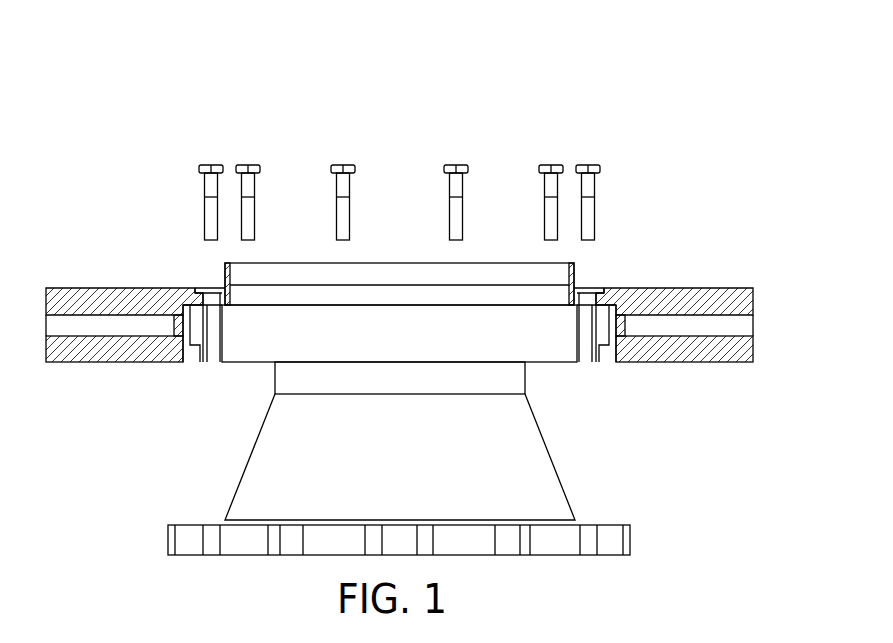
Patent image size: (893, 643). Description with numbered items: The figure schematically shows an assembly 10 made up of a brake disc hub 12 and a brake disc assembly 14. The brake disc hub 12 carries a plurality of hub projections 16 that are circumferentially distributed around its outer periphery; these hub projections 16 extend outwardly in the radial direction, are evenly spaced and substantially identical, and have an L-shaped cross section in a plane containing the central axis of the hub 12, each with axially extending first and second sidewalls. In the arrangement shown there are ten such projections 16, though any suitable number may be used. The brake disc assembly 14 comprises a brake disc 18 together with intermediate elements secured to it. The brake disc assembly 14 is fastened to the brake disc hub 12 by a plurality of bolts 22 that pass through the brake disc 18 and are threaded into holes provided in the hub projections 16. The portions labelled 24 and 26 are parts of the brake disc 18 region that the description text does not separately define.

The assembly 10 is at (481, 78).
The brake disc hub 12 is at (565, 463).
The brake disc assembly 14 is at (662, 269).
The hub projection 16 is at (195, 358).
The brake disc 18 is at (82, 287).
The bolt 22 is at (350, 190).
The upper plate layer 24 is at (137, 294).
The lower plate layer 26 is at (85, 357).